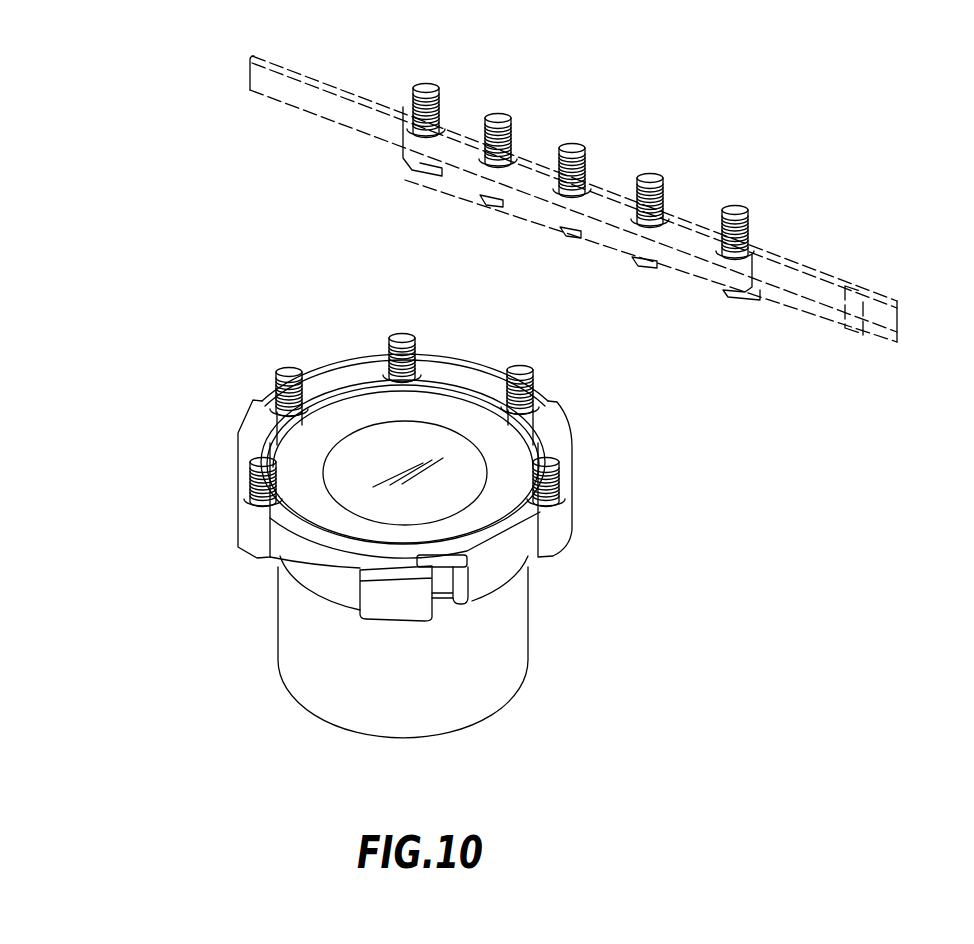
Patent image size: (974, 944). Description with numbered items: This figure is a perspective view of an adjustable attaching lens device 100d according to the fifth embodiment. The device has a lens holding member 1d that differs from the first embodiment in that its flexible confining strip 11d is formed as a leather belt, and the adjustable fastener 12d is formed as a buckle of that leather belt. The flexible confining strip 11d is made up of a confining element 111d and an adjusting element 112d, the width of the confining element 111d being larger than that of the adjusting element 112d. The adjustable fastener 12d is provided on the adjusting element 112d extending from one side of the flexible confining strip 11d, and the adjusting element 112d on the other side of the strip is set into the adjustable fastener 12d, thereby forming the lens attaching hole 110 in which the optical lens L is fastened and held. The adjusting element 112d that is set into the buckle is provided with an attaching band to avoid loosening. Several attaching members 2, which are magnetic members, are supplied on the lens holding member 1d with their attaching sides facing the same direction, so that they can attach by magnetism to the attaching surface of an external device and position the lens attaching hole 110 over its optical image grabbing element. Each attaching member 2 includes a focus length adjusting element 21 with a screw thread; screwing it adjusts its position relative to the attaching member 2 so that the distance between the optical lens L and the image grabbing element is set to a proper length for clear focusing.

The adjustable attaching lens device 100d is at (903, 183).
The lens holding member 1d is at (347, 363).
The flexible confining strip 11d is at (735, 408).
The confining element 111d is at (555, 435).
The adjusting element 112d is at (497, 563).
The adjustable fastener 12d is at (465, 567).
The attaching member 2 is at (273, 400).
The focus length adjusting element 21 is at (288, 376).
The lens attaching hole 110 is at (330, 543).
The optical lens L is at (450, 445).